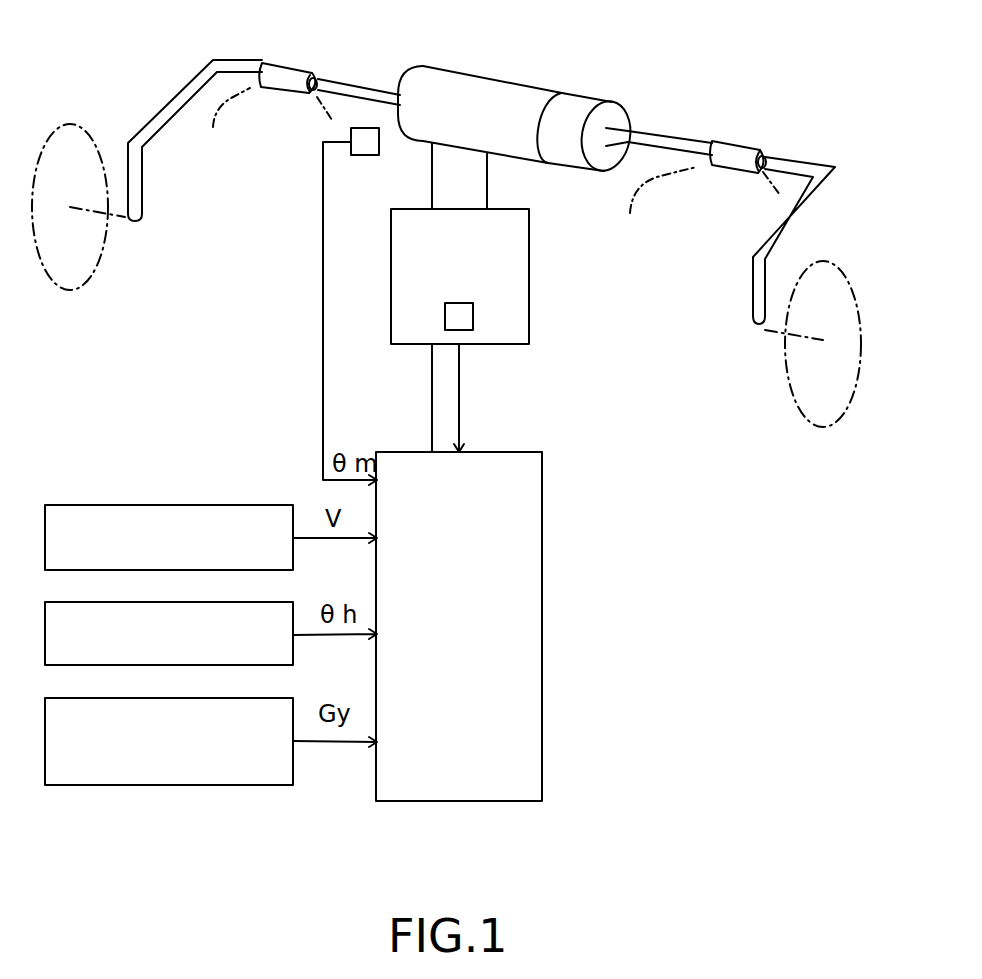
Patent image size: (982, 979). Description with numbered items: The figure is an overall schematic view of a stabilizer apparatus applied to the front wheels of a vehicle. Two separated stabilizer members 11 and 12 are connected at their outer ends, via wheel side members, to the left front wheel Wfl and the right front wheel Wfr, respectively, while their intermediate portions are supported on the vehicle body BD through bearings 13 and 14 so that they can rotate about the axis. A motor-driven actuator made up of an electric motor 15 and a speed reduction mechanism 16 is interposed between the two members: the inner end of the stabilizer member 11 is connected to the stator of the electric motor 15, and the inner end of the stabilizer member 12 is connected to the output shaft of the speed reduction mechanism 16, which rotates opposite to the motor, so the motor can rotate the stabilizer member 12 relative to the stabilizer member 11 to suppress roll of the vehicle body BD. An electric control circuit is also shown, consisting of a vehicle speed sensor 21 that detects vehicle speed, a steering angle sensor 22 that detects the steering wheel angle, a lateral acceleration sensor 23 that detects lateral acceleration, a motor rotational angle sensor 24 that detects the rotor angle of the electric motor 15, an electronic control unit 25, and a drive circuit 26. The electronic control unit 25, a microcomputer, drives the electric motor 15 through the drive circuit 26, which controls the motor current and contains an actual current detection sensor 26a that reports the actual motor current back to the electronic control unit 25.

The stabilizer member 11 is at (240, 60).
The stabilizer member 12 is at (804, 170).
The bearing 13 is at (290, 64).
The bearing 14 is at (735, 147).
The electric motor 15 is at (486, 78).
The speed reduction mechanism 16 is at (581, 94).
The vehicle speed sensor 21 is at (242, 505).
The steering angle sensor 22 is at (242, 602).
The lateral acceleration sensor 23 is at (242, 698).
The motor rotational angle sensor 24 is at (364, 157).
The electronic control unit 25 is at (542, 533).
The drive circuit 26 is at (529, 278).
The actual current detection sensor 26a is at (473, 317).
The vehicle body BD is at (488, 166).
The left front wheel Wfl is at (98, 247).
The right front wheel Wfr is at (840, 410).